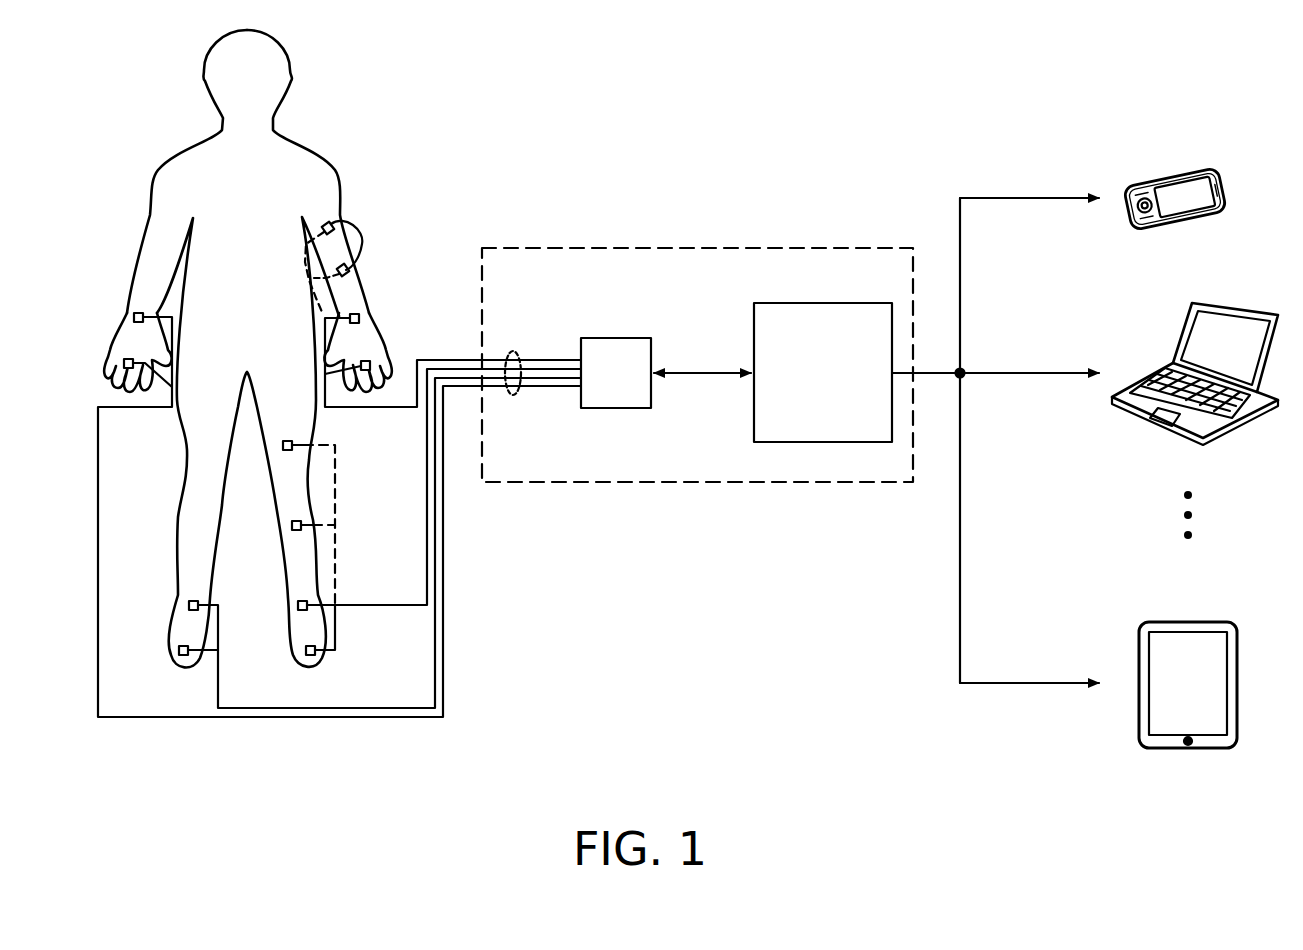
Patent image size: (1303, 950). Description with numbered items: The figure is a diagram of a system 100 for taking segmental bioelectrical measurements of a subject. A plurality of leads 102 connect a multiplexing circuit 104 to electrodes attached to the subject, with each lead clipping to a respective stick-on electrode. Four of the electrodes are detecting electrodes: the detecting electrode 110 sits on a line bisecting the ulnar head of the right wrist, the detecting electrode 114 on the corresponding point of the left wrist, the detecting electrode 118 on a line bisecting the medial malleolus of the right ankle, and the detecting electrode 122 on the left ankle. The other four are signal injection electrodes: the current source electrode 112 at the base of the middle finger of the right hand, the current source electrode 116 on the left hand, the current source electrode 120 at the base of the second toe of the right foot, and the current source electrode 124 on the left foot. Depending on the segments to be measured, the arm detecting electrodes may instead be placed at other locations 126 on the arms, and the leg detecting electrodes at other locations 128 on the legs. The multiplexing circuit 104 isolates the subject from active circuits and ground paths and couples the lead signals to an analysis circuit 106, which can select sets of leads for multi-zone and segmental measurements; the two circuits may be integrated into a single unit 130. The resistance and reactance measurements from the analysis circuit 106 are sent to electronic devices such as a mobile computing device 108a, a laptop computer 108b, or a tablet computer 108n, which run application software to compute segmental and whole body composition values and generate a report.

The system 100 is at (837, 95).
The leads 102 is at (514, 394).
The multiplexing circuit 104 is at (607, 337).
The analysis circuit 106 is at (813, 302).
The mobile computing device 108a is at (1180, 170).
The laptop computer 108b is at (1200, 303).
The tablet computer 108n is at (1203, 620).
The detecting electrode 110 is at (130, 311).
The current source electrode 112 is at (119, 350).
The detecting electrode 114 is at (368, 311).
The current source electrode 116 is at (376, 356).
The detecting electrode 118 is at (189, 602).
The current source electrode 120 is at (174, 660).
The detecting electrode 122 is at (291, 622).
The current source electrode 124 is at (300, 660).
The locations 126 is at (361, 243).
The locations 128 is at (336, 493).
The single unit 130 is at (575, 247).